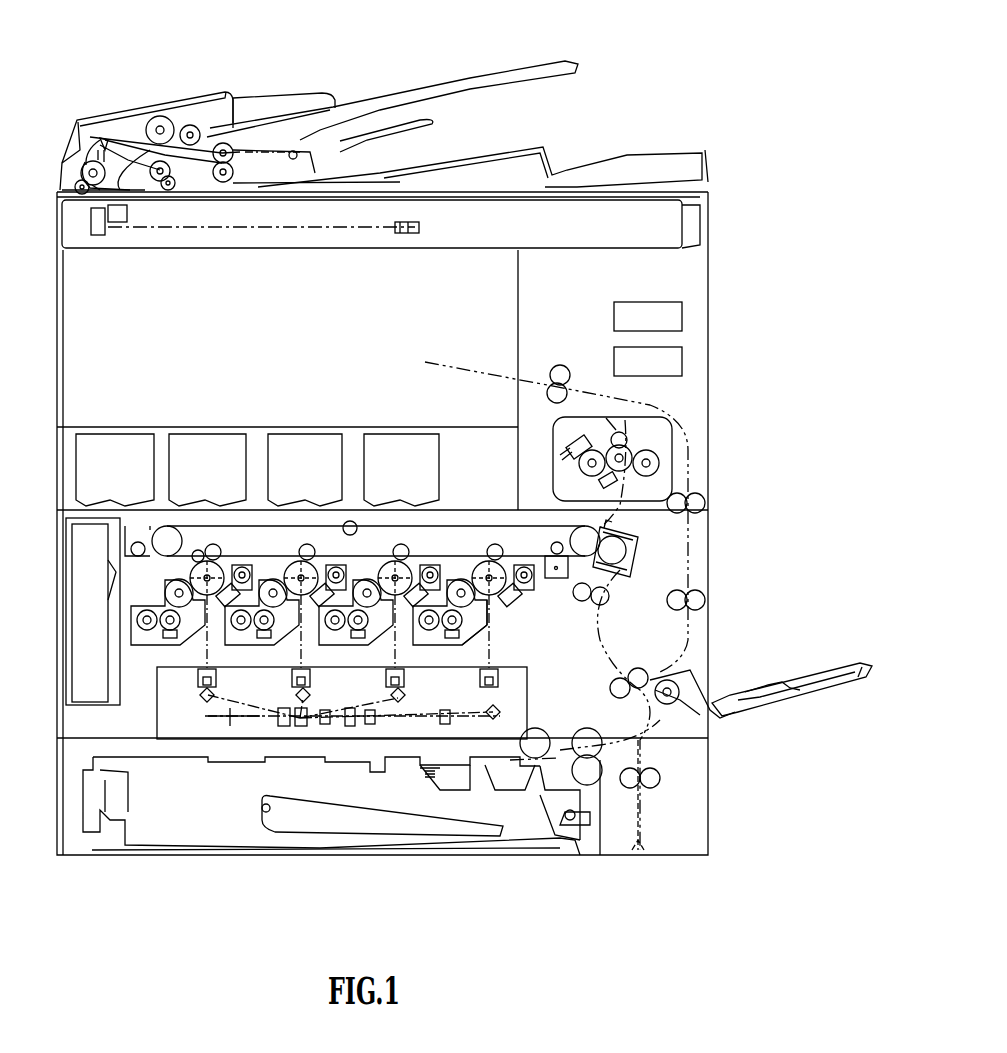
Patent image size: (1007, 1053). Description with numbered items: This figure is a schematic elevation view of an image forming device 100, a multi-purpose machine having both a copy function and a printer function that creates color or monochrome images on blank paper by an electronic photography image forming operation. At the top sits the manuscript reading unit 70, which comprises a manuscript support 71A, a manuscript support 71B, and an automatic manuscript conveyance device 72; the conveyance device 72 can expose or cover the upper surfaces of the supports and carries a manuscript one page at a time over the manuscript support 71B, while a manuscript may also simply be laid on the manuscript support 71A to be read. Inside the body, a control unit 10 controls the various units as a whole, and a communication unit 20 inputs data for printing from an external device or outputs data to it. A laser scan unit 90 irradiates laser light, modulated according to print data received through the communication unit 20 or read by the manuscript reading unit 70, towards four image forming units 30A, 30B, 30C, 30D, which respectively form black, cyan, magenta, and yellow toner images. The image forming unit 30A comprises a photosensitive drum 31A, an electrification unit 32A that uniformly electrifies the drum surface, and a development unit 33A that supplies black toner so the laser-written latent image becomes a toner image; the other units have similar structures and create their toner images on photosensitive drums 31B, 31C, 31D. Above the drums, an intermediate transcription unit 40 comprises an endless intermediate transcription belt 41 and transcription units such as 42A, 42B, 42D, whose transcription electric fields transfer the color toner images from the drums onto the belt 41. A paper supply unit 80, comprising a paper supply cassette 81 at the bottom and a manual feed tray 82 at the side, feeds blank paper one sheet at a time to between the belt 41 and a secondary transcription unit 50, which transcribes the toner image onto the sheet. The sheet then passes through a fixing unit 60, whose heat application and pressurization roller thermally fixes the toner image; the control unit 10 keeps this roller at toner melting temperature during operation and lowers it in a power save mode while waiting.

The image forming device 100 is at (747, 115).
The automatic manuscript conveyance device 72 is at (158, 98).
The manuscript support 71A is at (520, 178).
The manuscript support 71B is at (118, 148).
The manuscript reading unit 70 is at (690, 213).
The control unit 10 is at (683, 313).
The communication unit 20 is at (683, 358).
The image forming unit 30A is at (430, 470).
The image forming unit 30B is at (352, 470).
The image forming unit 30C is at (250, 470).
The image forming unit 30D is at (175, 470).
The intermediate transcription unit 40 is at (362, 491).
The intermediate transcription belt 41 is at (462, 523).
The transcription unit 42A is at (495, 547).
The transcription unit 42B is at (307, 545).
The transcription unit 42D is at (213, 545).
The photosensitive drum 31A is at (497, 562).
The photosensitive drum 31B is at (395, 561).
The photosensitive drum 31C is at (301, 561).
The photosensitive drum 31D is at (207, 561).
The electrification unit 32A is at (510, 605).
The development unit 33A is at (490, 640).
The laser scan unit 90 is at (520, 690).
The fixing unit 60 is at (672, 460).
The secondary transcription unit 50 is at (640, 548).
The paper supply unit 80 is at (738, 659).
The manual feed tray 82 is at (808, 700).
The paper supply cassette 81 is at (578, 838).